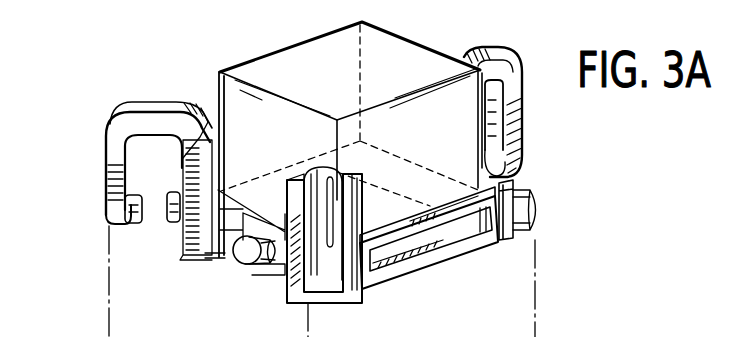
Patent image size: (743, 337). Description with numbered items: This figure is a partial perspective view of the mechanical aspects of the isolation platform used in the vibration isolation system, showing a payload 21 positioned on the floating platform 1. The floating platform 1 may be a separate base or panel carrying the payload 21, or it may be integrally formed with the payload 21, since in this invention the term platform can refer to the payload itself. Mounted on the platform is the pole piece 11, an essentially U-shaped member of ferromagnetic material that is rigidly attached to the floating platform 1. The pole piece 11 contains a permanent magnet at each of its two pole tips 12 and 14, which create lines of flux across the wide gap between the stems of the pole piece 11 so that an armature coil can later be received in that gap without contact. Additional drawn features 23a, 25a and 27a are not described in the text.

The floating platform 1 is at (450, 264).
The pole piece 11 is at (116, 118).
The pole tip 12 is at (167, 196).
The pole tip 14 is at (142, 222).
The payload 21 is at (335, 79).
The guide groove 23a is at (427, 133).
The adjusting knob 25a is at (542, 211).
The locking knob 27a is at (244, 268).